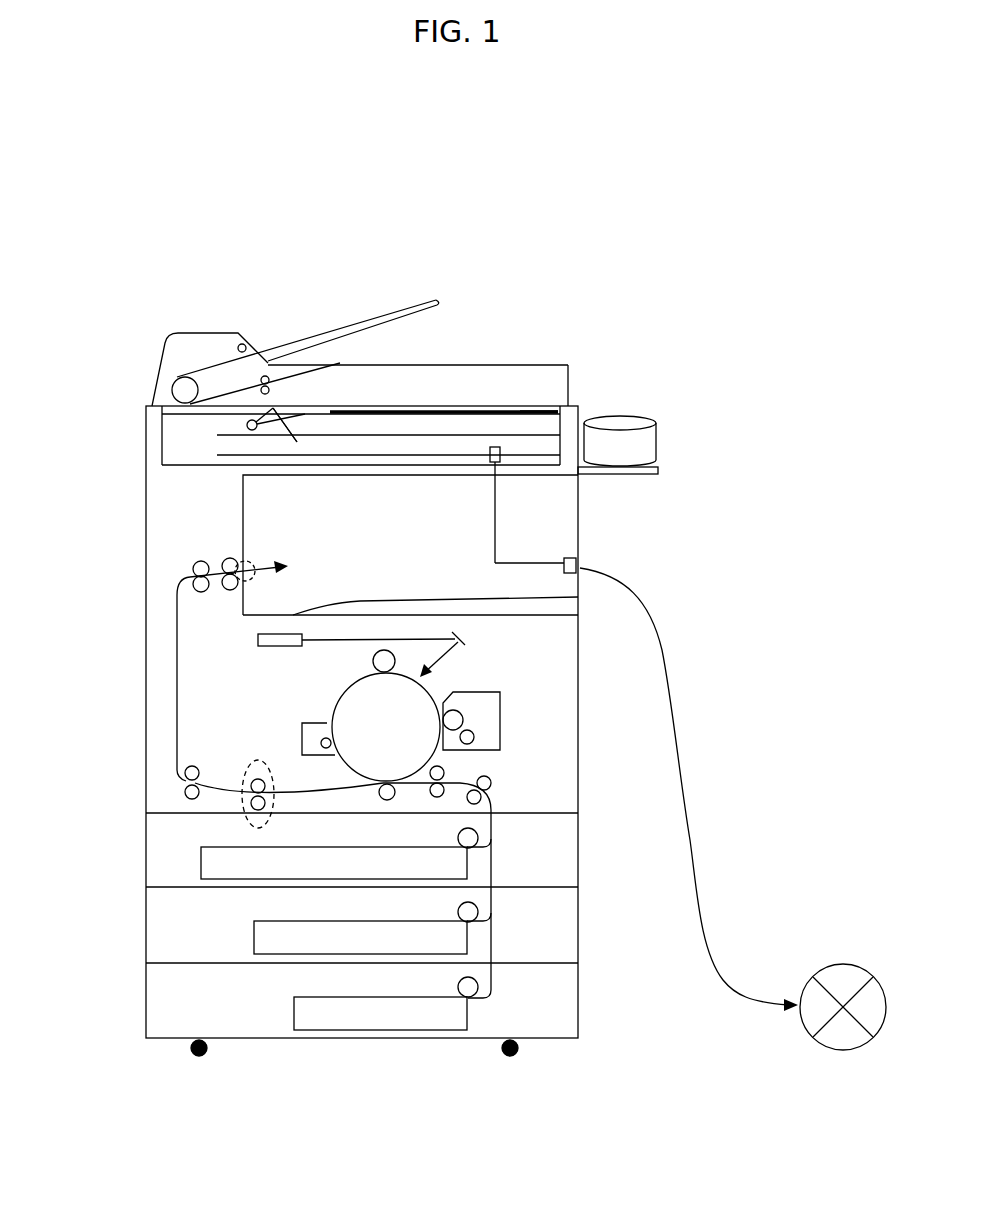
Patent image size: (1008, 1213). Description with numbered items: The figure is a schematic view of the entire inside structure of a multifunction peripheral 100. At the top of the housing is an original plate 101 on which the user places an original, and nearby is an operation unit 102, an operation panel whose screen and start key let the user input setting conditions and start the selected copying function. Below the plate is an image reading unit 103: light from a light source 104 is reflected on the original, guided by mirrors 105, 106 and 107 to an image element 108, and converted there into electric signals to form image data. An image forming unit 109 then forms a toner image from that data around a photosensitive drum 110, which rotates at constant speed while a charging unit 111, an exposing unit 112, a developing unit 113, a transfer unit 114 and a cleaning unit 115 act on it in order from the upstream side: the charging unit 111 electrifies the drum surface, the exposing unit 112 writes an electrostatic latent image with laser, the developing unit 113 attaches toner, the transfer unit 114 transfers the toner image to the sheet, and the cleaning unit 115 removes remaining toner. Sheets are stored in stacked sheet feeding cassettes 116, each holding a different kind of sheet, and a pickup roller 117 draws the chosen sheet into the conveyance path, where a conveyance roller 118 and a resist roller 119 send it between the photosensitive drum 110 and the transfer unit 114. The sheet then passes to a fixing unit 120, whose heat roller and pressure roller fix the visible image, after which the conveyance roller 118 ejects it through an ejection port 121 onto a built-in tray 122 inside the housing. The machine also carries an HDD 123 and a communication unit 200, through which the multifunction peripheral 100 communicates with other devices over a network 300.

The multifunction peripheral 100 is at (361, 302).
The original plate 101 is at (452, 408).
The operation unit 102 is at (530, 408).
The image reading unit 103 is at (137, 467).
The light source 104 is at (305, 414).
The mirror 105 is at (280, 443).
The mirror 106 is at (208, 440).
The mirror 107 is at (218, 428).
The image element 108 is at (500, 447).
The image forming unit 109 is at (135, 795).
The photosensitive drum 110 is at (348, 703).
The charging unit 111 is at (373, 657).
The exposing unit 112 is at (258, 640).
The developing unit 113 is at (500, 693).
The transfer unit 114 is at (383, 786).
The cleaning unit 115 is at (302, 730).
The sheet feeding cassette 116 is at (202, 867).
The pickup roller 117 is at (468, 838).
The conveyance roller 118 is at (190, 772).
The resist roller 119 is at (433, 794).
The fixing unit 120 is at (240, 803).
The ejection port 121 is at (250, 560).
The built-in tray 122 is at (347, 603).
The HDD 123 is at (657, 443).
The communication unit 200 is at (580, 562).
The network 300 is at (813, 977).